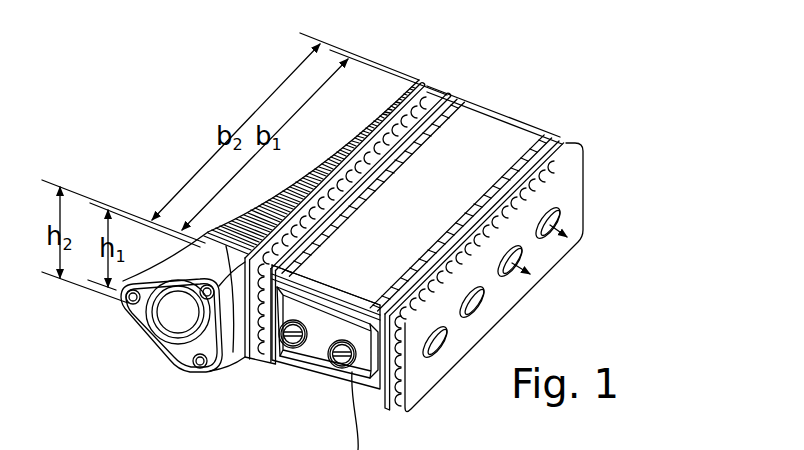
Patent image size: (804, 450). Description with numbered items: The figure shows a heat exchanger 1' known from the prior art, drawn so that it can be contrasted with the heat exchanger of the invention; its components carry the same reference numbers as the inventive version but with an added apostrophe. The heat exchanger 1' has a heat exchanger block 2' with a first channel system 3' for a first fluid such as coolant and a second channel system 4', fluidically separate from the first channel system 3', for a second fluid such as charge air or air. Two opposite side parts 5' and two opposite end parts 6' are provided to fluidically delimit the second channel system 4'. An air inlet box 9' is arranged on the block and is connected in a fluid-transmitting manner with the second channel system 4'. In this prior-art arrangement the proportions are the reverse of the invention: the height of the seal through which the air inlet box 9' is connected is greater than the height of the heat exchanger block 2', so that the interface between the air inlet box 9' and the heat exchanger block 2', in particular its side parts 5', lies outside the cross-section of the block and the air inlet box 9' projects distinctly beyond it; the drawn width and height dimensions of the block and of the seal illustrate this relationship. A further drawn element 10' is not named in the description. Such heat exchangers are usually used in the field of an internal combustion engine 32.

The heat exchanger 1' is at (391, 228).
The heat exchanger block 2' is at (406, 233).
The first channel system 3' is at (326, 357).
The second channel system 4' is at (171, 332).
The side parts 5' is at (412, 205).
The end parts 6' is at (404, 226).
The air inlet box 9' is at (267, 265).
The end plate 10' is at (536, 269).
The internal combustion engine 32 is at (638, 86).